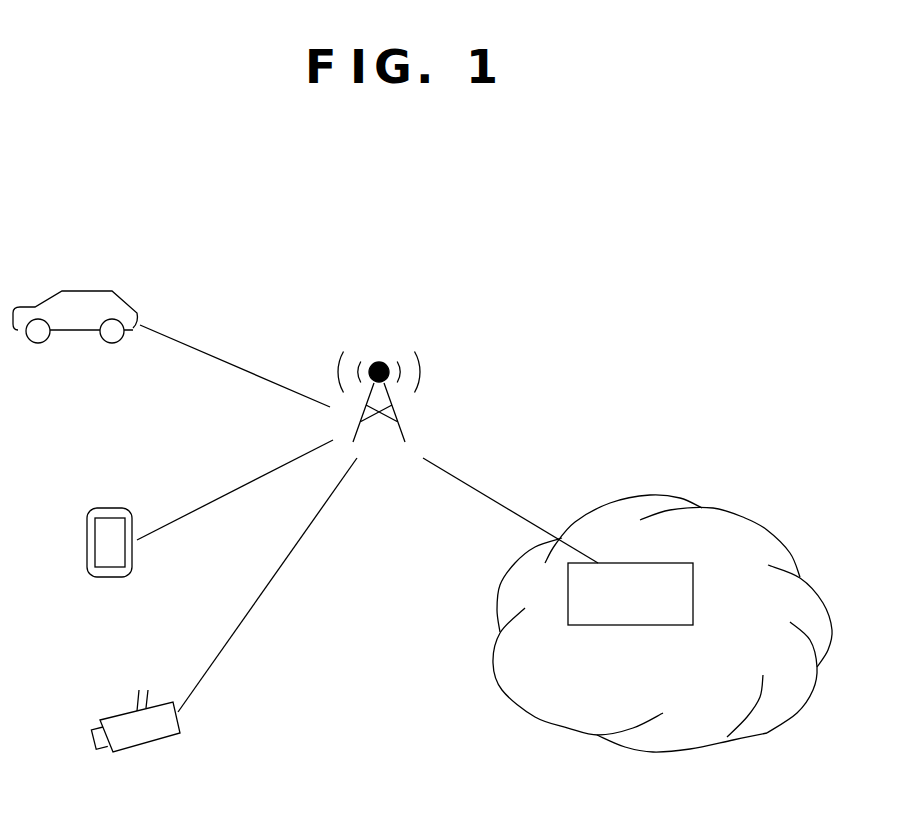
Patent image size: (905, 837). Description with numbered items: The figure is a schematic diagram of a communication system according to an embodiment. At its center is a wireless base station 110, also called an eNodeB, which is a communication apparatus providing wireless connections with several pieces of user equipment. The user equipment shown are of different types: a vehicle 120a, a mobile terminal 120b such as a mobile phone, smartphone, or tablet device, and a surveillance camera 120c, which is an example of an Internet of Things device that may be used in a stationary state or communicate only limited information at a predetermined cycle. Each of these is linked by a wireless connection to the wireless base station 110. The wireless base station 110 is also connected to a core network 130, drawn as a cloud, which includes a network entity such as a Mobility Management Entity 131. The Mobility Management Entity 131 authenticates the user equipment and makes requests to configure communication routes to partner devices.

The wireless base station 110 is at (381, 362).
The vehicle 120a is at (80, 288).
The mobile terminal 120b is at (110, 508).
The surveillance camera 120c is at (116, 715).
The core network 130 is at (677, 498).
The Mobility Management Entity (MME) 131 is at (623, 625).